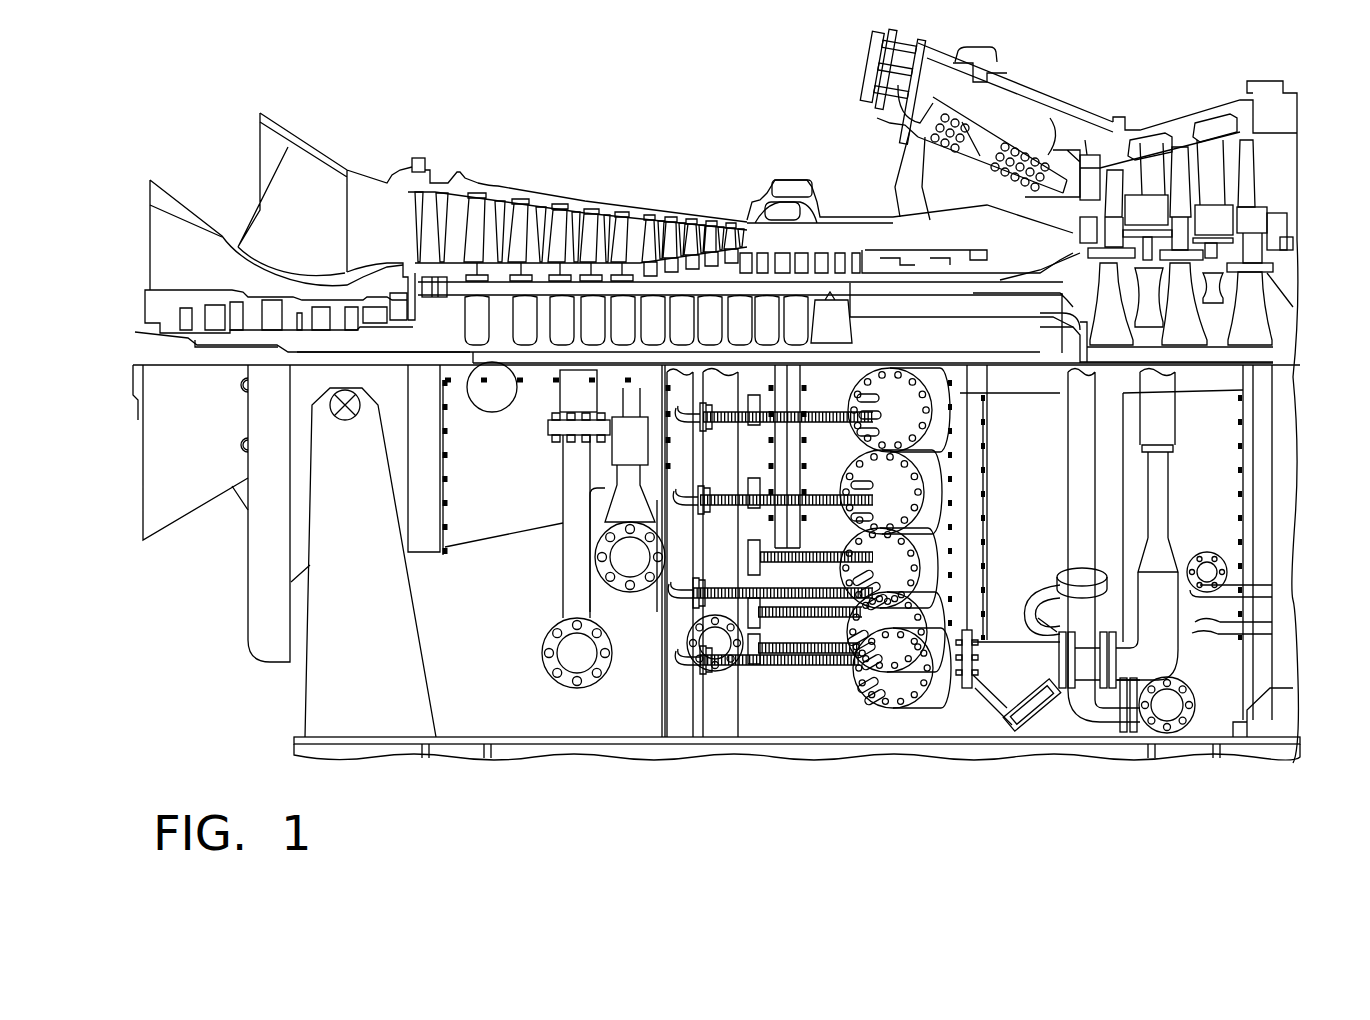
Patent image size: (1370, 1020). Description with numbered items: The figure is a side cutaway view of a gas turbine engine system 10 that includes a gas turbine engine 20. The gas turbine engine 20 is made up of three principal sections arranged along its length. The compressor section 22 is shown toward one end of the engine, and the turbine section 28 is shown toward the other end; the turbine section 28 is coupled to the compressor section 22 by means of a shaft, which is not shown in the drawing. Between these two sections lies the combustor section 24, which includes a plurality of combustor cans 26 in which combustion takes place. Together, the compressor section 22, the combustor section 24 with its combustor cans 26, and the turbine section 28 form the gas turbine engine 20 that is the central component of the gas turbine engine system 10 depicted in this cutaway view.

The gas turbine engine system 10 is at (207, 731).
The gas turbine engine 20 is at (222, 100).
The compressor section 22 is at (512, 486).
The combustor section 24 is at (820, 719).
The combustor cans 26 is at (964, 672).
The turbine section 28 is at (1035, 512).